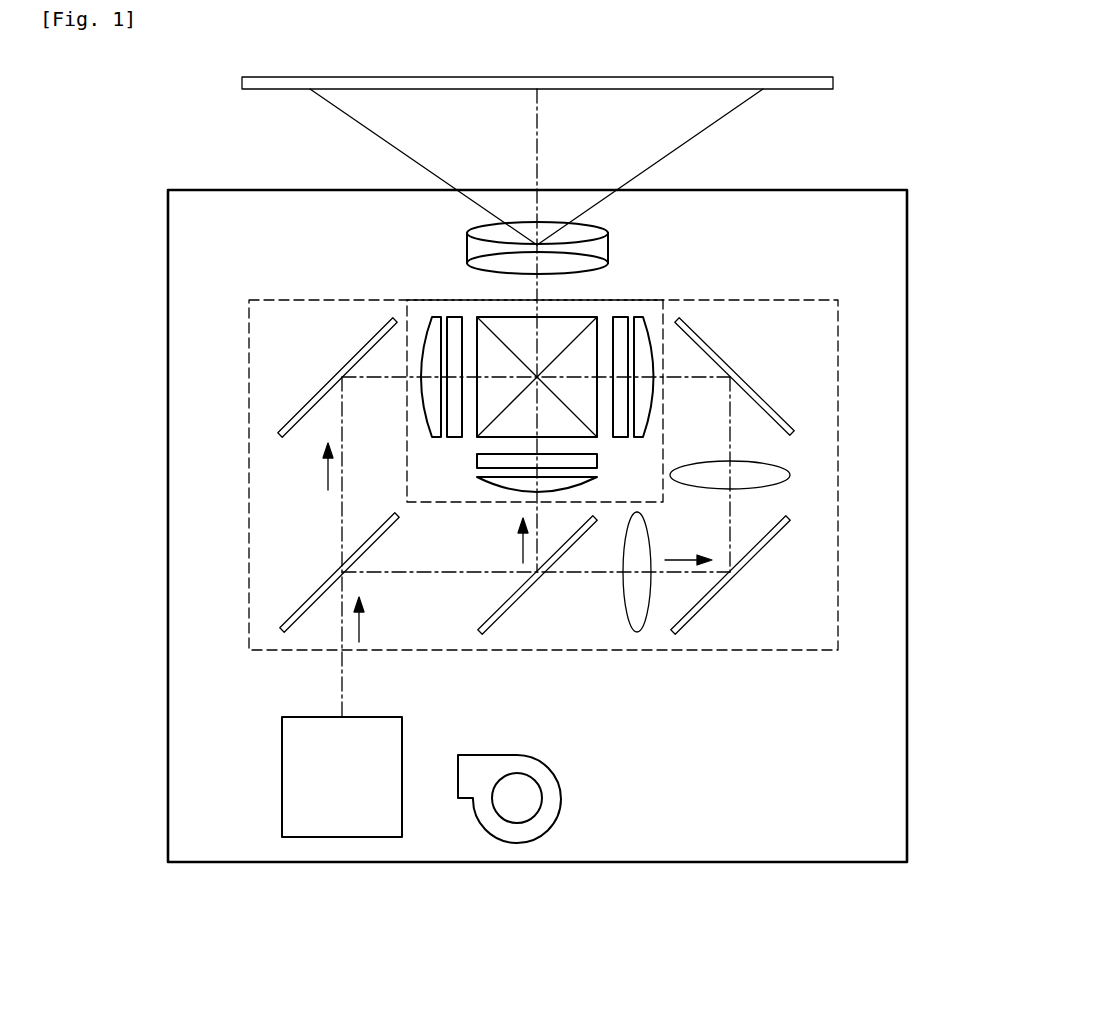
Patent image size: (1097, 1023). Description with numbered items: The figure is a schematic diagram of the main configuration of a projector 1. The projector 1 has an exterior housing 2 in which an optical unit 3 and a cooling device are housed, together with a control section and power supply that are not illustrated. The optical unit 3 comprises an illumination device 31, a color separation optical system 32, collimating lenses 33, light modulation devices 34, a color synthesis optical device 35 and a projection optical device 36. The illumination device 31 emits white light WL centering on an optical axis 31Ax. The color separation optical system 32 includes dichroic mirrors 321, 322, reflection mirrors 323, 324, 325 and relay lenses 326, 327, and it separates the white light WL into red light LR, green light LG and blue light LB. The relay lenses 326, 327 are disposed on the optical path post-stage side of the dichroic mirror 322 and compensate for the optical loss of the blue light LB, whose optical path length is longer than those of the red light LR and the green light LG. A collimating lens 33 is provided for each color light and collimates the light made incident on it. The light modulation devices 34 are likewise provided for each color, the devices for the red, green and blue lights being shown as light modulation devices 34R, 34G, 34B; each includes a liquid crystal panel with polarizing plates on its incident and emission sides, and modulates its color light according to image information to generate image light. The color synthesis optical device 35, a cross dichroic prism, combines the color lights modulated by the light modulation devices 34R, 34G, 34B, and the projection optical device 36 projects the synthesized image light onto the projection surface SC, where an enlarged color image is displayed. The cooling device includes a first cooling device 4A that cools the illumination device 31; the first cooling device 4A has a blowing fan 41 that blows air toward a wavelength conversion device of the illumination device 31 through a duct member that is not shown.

The projector 1 is at (924, 174).
The exterior housing 2 is at (907, 401).
The optical unit 3 is at (751, 740).
The illumination device 31 is at (282, 777).
The optical axis 31Ax is at (342, 686).
The color separation optical system 32 is at (660, 652).
The dichroic mirror 321 is at (290, 614).
The dichroic mirror 322 is at (490, 628).
The reflection mirror 323 is at (290, 415).
The reflection mirror 324 is at (710, 600).
The reflection mirror 325 is at (787, 418).
The relay lens 326 is at (623, 588).
The relay lens 327 is at (755, 463).
The collimating lens 33 is at (430, 317).
The light modulation device 34 is at (540, 352).
The light modulation device for red light 34R is at (454, 377).
The light modulation device for green light 34G is at (537, 461).
The light modulation device for blue light 34B is at (620, 377).
The color synthesis optical device 35 is at (582, 317).
The projection optical device 36 is at (467, 240).
The first cooling device 4A is at (576, 764).
The blowing fan 41 is at (505, 755).
The projection surface SC is at (808, 93).
The white light WL is at (380, 621).
The red light LR is at (311, 466).
The green light LG is at (506, 540).
The blue light LB is at (688, 544).